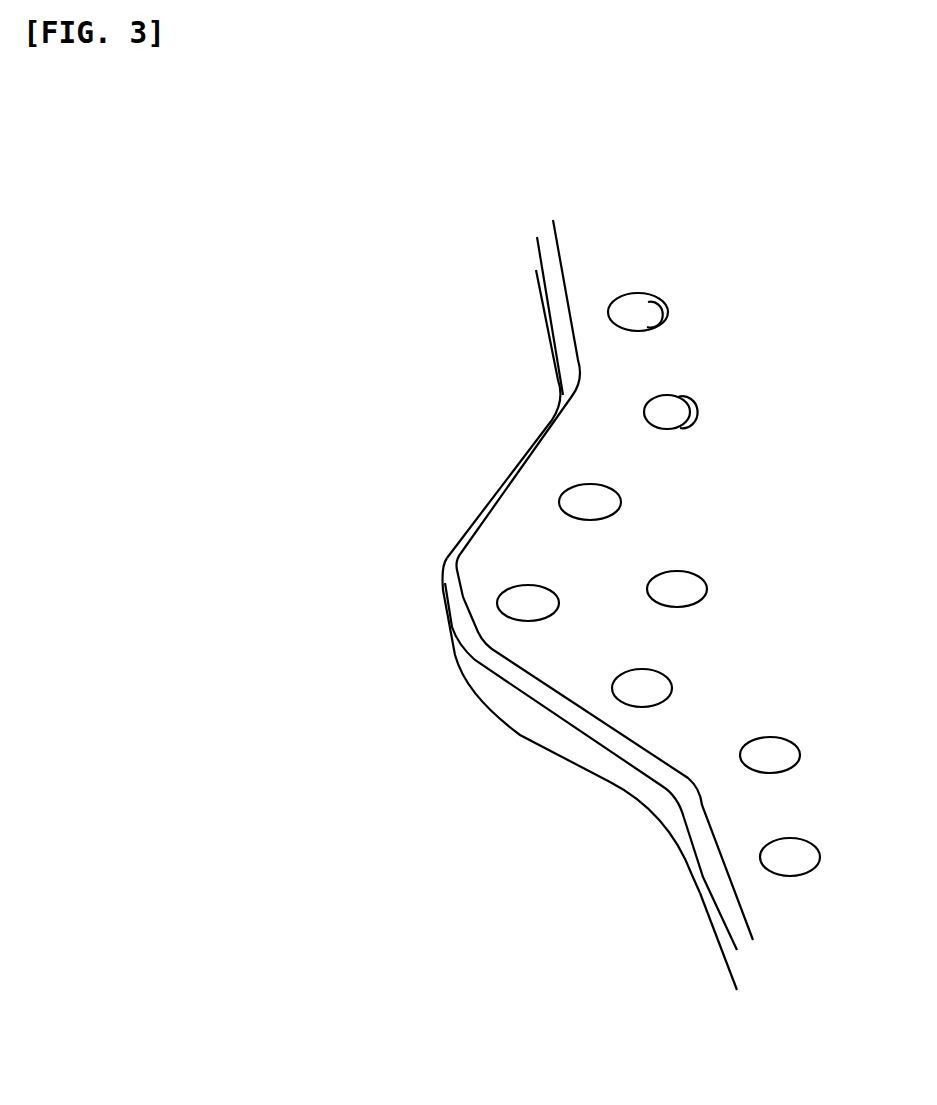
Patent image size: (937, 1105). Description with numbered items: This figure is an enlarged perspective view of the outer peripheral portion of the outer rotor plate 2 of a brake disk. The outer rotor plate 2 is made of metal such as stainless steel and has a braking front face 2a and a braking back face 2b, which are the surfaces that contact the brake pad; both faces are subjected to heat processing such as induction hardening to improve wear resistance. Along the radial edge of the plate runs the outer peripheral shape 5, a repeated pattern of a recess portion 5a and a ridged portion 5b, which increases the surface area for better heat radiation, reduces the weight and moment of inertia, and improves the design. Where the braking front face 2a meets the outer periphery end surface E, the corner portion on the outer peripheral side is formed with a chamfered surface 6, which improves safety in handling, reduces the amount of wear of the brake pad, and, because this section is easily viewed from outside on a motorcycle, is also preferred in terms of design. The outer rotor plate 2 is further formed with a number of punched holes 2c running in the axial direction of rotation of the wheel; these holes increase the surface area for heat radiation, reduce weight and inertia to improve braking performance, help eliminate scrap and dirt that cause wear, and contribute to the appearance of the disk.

The outer rotor plate 2 is at (597, 218).
The braking front face 2a is at (712, 725).
The braking back face 2b is at (707, 912).
The punched holes 2c is at (667, 303).
The outer peripheral shape 5 is at (520, 754).
The recess portion 5a is at (667, 807).
The ridged portion 5b is at (453, 635).
The chamfered surface 6 is at (562, 327).
The outer periphery end surface E is at (480, 463).